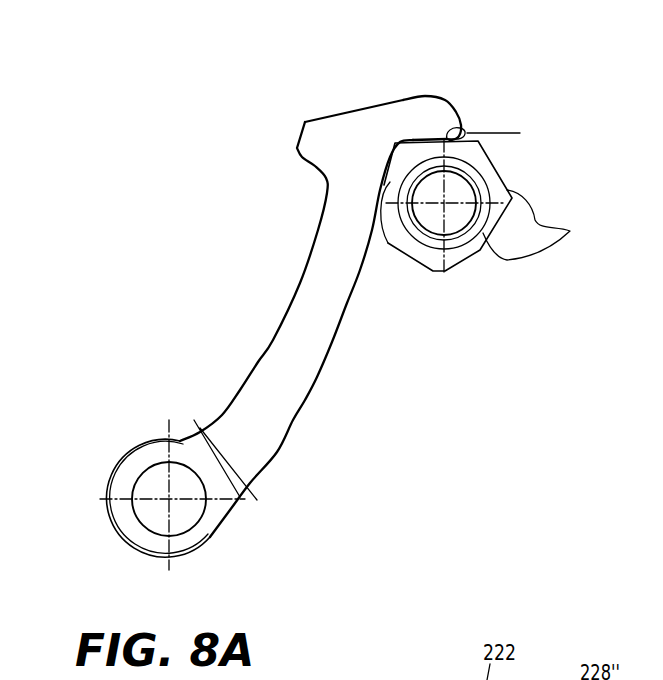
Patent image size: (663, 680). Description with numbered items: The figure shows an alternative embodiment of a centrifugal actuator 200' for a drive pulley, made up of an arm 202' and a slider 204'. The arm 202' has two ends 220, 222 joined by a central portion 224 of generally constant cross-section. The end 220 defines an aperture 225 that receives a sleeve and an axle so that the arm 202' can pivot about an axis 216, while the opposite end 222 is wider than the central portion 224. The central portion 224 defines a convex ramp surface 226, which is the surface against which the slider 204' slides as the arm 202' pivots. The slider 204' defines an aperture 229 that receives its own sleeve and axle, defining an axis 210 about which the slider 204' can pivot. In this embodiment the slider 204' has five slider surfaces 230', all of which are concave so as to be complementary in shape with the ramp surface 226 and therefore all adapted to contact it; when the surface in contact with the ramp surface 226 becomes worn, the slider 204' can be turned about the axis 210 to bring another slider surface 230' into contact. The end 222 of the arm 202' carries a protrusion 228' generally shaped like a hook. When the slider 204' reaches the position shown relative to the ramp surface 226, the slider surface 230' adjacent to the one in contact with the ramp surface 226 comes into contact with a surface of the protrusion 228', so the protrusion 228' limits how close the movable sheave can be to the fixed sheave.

The centrifugal actuator 200' is at (329, 319).
The arm 202' is at (296, 329).
The slider 204' is at (498, 221).
The axis 210 is at (444, 203).
The axis 216 is at (169, 499).
The end 220 is at (125, 543).
The end 222 is at (382, 97).
The central portion 224 is at (300, 283).
The aperture 225 is at (138, 480).
The ramp surface 226 is at (318, 378).
The protrusion 228' is at (483, 104).
The aperture 229 is at (468, 238).
The slider surfaces 230' is at (498, 205).